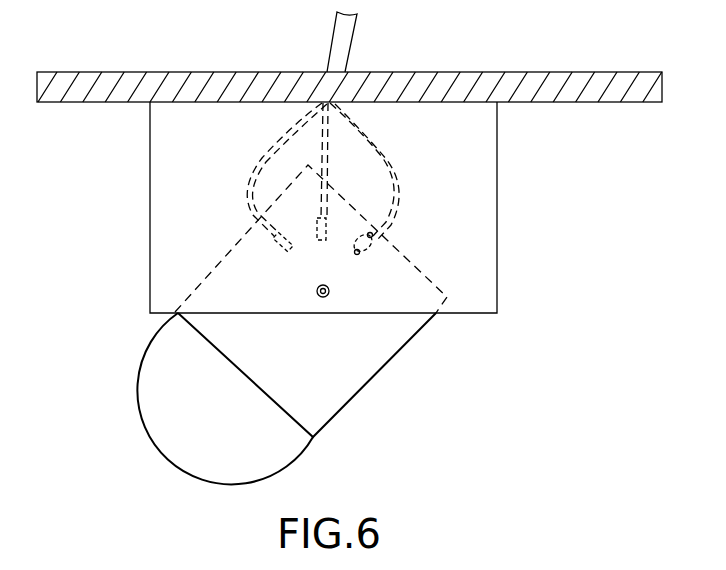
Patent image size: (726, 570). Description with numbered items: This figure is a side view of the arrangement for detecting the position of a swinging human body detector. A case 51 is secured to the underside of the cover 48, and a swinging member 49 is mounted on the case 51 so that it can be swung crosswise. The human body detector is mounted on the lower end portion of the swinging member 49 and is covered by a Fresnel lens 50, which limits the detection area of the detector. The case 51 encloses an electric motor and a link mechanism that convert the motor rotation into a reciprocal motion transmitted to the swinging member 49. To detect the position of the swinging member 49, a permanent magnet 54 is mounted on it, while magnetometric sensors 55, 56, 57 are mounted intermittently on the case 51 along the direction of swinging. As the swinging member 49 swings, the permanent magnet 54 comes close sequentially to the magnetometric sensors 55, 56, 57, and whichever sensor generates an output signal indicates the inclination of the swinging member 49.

The cover 48 is at (632, 103).
The swinging member 49 is at (394, 355).
The Fresnel lens 50 is at (221, 482).
The case 51 is at (497, 193).
The permanent magnet 54 is at (372, 250).
The magnetometric sensor 55 is at (322, 241).
The magnetometric sensor 56 is at (356, 256).
The magnetometric sensor 57 is at (282, 251).